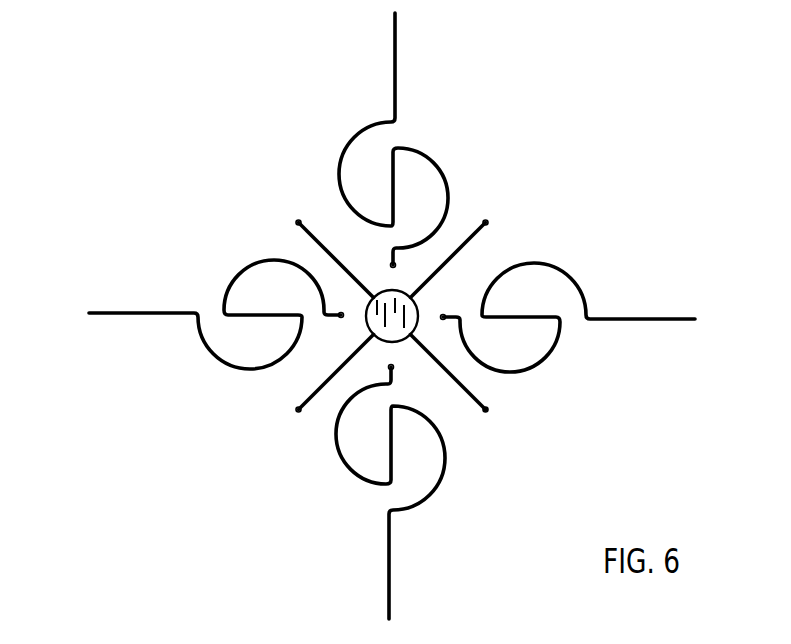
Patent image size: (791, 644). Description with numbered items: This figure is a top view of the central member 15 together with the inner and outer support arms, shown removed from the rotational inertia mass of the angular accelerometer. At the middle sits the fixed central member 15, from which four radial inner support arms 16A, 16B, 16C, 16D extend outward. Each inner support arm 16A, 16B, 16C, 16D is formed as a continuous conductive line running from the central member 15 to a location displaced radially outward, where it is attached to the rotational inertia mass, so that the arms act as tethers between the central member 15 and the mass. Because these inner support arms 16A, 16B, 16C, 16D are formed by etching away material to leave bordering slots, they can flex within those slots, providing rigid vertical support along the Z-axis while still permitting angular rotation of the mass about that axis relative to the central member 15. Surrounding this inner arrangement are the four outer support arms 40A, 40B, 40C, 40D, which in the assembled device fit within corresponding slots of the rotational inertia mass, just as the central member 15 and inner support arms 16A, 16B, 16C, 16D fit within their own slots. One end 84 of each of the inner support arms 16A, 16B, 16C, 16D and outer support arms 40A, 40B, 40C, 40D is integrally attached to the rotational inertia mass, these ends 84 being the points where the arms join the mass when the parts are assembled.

The central member 15 is at (413, 303).
The inner support arm 16A is at (309, 220).
The inner support arm 16B is at (470, 227).
The inner support arm 16C is at (479, 403).
The inner support arm 16D is at (296, 405).
The outer support arm 40A is at (357, 131).
The outer support arm 40B is at (571, 274).
The outer support arm 40C is at (434, 494).
The outer support arm 40D is at (227, 364).
The end of support arm 84 is at (296, 221).